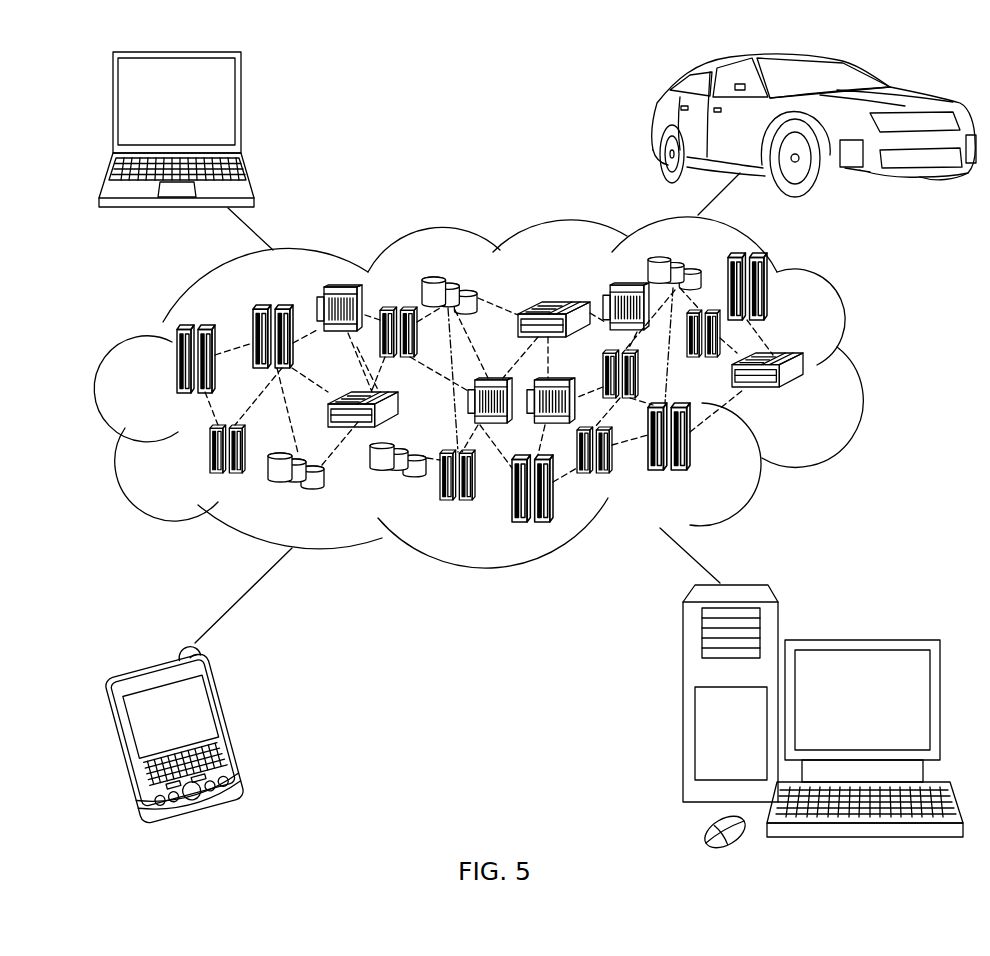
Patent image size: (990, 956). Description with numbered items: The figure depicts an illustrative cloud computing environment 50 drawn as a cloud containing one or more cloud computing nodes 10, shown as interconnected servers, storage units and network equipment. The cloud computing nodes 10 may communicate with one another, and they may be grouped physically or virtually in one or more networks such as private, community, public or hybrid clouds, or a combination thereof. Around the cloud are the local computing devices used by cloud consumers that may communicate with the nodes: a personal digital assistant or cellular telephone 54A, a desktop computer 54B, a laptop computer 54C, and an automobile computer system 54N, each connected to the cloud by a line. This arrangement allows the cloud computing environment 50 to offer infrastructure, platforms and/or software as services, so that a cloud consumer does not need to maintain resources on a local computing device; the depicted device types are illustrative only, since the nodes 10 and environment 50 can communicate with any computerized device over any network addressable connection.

The cloud computing environment 50 is at (860, 365).
The cloud computing nodes 10 is at (812, 399).
The personal digital assistant (PDA) or cellular telephone 54A is at (235, 727).
The desktop computer 54B is at (860, 639).
The laptop computer 54C is at (242, 107).
The automobile computer system 54N is at (652, 124).